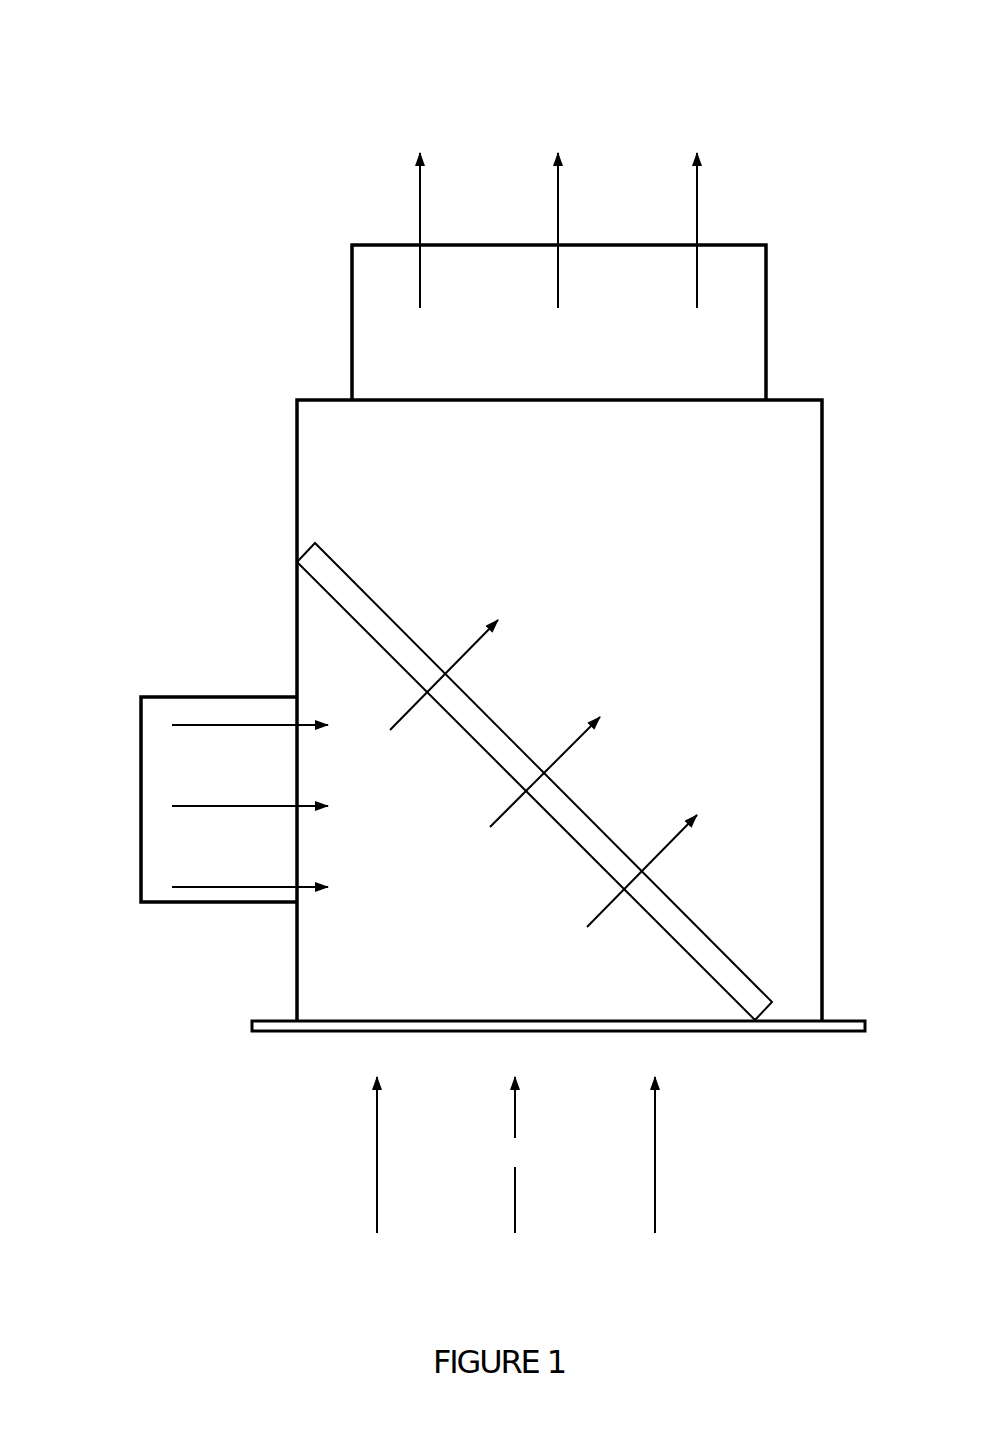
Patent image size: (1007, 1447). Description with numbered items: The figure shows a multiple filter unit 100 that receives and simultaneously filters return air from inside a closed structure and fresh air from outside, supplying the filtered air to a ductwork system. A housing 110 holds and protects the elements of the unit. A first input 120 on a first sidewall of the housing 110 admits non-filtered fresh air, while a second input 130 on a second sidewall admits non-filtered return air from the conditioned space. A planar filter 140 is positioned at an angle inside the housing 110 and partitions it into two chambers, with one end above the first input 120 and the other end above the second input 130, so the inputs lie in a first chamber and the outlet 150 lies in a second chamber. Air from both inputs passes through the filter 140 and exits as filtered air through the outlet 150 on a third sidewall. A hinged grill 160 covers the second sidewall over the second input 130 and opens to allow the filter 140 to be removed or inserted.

The multiple filter unit 100 is at (220, 115).
The housing 110 is at (294, 482).
The first input 120 is at (138, 706).
The second input 130 is at (651, 1013).
The filter 140 is at (612, 880).
The outlet 150 is at (349, 321).
The hinged grill 160 is at (396, 1032).